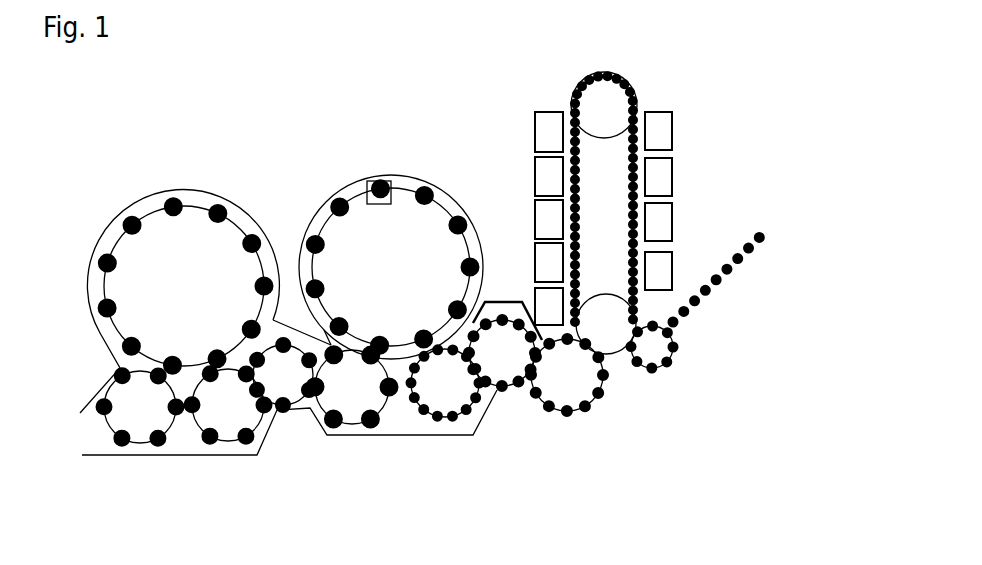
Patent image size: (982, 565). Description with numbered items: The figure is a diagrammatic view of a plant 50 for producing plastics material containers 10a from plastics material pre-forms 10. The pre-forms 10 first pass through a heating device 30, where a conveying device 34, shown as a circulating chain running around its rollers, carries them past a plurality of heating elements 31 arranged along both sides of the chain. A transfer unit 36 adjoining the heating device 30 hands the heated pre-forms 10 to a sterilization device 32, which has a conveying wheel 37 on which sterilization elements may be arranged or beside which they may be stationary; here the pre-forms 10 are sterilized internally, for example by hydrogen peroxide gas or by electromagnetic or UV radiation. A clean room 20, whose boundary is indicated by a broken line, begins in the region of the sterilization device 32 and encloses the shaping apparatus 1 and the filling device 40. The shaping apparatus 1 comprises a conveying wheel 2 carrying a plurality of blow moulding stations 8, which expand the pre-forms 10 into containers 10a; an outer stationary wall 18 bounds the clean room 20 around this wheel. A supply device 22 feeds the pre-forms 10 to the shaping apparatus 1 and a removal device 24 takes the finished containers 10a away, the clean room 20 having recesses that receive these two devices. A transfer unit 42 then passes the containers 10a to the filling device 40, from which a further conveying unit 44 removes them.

The shaping apparatus 1 is at (375, 152).
The conveying wheel 2 is at (435, 250).
The blow moulding station 8 is at (390, 183).
The plastics material pre-form 10 is at (682, 322).
The plastics material container 10a is at (380, 437).
The wall 18 is at (437, 187).
The clean room 20 is at (328, 178).
The supply device 22 is at (478, 400).
The removal device 24 is at (347, 415).
The heating device 30 is at (562, 77).
The heating element 31 is at (552, 132).
The sterilization device 32 is at (503, 280).
The conveying device 34 is at (608, 98).
The transfer unit 36 is at (560, 395).
The conveying wheel 37 is at (503, 367).
The filling device 40 is at (155, 232).
The transfer unit 42 is at (253, 407).
The conveying unit 44 is at (125, 415).
The plant 50 is at (313, 78).